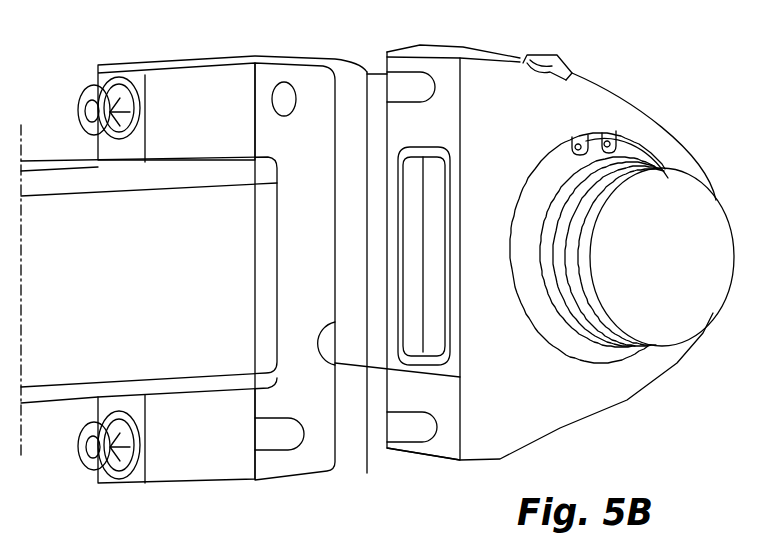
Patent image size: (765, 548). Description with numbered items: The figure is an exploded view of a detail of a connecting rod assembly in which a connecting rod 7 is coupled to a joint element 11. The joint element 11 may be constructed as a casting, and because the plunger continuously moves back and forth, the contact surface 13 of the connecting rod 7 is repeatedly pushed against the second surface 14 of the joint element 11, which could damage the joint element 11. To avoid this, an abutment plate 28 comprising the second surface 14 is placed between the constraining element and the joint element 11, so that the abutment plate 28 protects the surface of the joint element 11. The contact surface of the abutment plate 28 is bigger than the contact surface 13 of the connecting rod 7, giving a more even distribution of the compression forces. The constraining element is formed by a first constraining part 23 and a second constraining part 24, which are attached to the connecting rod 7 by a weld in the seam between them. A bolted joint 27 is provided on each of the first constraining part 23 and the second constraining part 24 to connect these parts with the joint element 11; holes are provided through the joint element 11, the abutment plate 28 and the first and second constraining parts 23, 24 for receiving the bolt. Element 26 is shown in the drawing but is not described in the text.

The connecting rod 7 is at (122, 285).
The joint element 11 is at (655, 103).
The contact surface of the connecting rod 13 is at (277, 282).
The second surface of the joint element 14 is at (460, 377).
The first constraining part 23 is at (198, 86).
The second constraining part 24 is at (200, 448).
The bolt 26 is at (578, 67).
The bolted joint 27 is at (82, 77).
The abutment plate 28 is at (315, 90).